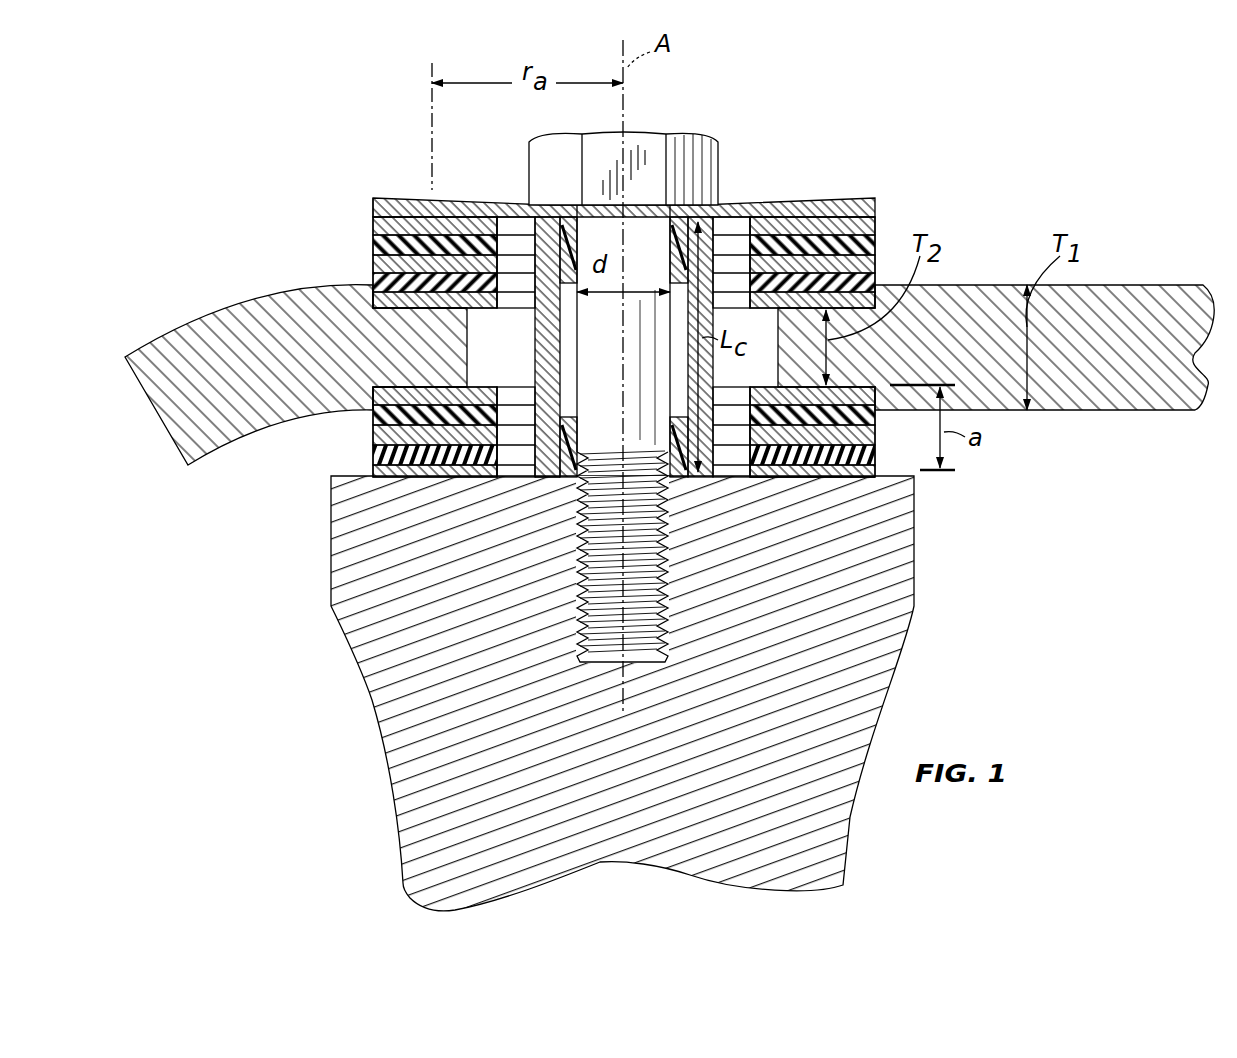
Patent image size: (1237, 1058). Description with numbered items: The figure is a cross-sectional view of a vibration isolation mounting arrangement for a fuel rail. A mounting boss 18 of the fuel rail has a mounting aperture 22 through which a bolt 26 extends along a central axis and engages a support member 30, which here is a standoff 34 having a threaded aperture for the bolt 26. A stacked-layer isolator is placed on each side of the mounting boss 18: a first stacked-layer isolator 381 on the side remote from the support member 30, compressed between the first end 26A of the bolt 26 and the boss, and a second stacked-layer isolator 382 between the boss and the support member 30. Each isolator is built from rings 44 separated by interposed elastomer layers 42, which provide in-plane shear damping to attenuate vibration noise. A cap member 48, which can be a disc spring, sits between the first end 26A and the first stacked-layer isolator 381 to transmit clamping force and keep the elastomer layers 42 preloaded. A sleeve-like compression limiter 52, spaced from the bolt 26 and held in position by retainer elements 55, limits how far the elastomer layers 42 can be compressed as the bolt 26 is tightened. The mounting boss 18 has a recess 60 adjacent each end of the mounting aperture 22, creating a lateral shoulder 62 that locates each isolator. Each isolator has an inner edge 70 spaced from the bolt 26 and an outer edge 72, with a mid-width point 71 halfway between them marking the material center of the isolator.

The mounting boss 18 is at (1123, 327).
The mounting aperture 22 is at (467, 340).
The bolt 26 is at (596, 606).
The first end of the bolt 26A is at (550, 162).
The support member 30 is at (806, 627).
The standoff 34 is at (875, 448).
The first stacked-layer isolator 381 is at (890, 222).
The second stacked-layer isolator 382 is at (884, 377).
The elastomer layer 42 is at (840, 283).
The ring 44 is at (808, 293).
The cap member 48 is at (407, 200).
The compression limiter 52 is at (540, 480).
The retainer element 55 is at (677, 236).
The recess 60 is at (405, 310).
The lateral shoulder 62 is at (368, 302).
The inner edge 70 is at (503, 222).
The mid-width point 71 is at (431, 100).
The outer edge 72 is at (372, 212).